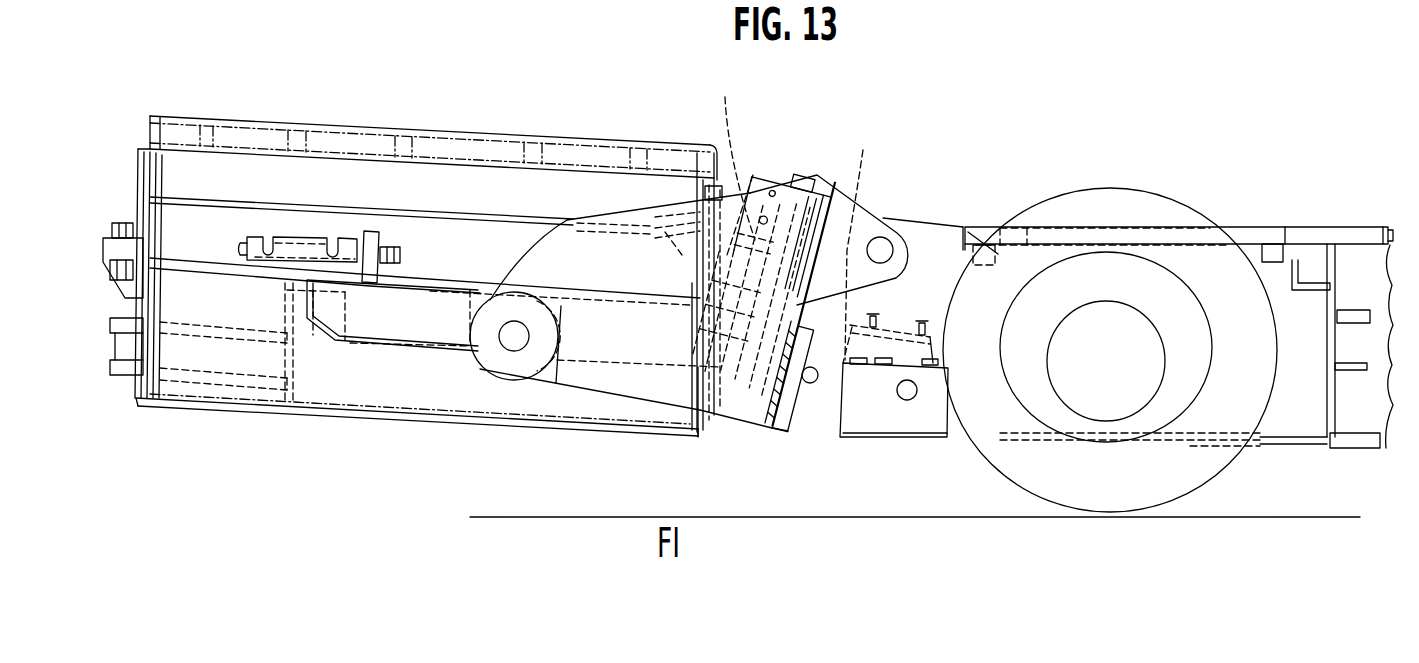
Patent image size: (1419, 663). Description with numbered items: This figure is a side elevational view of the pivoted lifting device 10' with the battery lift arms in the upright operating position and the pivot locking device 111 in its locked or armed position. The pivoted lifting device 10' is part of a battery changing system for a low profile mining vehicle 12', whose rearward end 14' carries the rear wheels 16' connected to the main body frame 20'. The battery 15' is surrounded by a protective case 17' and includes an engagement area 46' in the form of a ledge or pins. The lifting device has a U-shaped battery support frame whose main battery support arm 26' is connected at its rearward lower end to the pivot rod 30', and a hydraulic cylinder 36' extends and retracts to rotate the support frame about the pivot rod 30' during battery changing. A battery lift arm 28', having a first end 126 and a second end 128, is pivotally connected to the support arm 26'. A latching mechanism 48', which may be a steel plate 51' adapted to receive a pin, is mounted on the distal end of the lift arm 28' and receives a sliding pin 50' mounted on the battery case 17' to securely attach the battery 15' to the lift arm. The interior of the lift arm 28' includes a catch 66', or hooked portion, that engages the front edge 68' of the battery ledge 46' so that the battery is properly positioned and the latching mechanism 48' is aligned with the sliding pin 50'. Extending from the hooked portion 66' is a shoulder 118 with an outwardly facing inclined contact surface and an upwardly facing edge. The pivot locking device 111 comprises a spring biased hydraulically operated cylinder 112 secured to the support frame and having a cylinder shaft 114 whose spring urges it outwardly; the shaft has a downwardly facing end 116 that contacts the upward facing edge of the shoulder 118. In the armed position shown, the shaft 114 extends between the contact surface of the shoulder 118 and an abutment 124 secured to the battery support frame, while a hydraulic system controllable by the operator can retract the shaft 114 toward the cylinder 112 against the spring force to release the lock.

The pivoted lifting device 10' is at (669, 66).
The low profile mining vehicle 12' is at (1179, 298).
The rearward end 14' is at (825, 510).
The battery 15' is at (410, 293).
The rear wheels 16' is at (1110, 383).
The protective case 17' is at (216, 297).
The main body frame 20' is at (992, 201).
The main battery support arm 26' is at (704, 317).
The battery lift arm 28' is at (469, 331).
The pivot rod 30' is at (947, 190).
The hydraulic cylinder 36' is at (894, 404).
The engagement area 46' is at (300, 374).
The latching mechanism 48' is at (263, 159).
The sliding pin 50' is at (432, 172).
The steel plate 51' is at (392, 179).
The catch 66' is at (690, 129).
The front edge 68' is at (651, 197).
The pivot locking device 111 is at (867, 120).
The spring biased hydraulically operated cylinder 112 is at (770, 177).
The cylinder shaft 114 is at (787, 173).
The end of the shaft 116 is at (733, 417).
The shoulder 118 is at (723, 107).
The abutment 124 is at (904, 247).
The first end 126 is at (642, 362).
The second end 128 is at (333, 307).